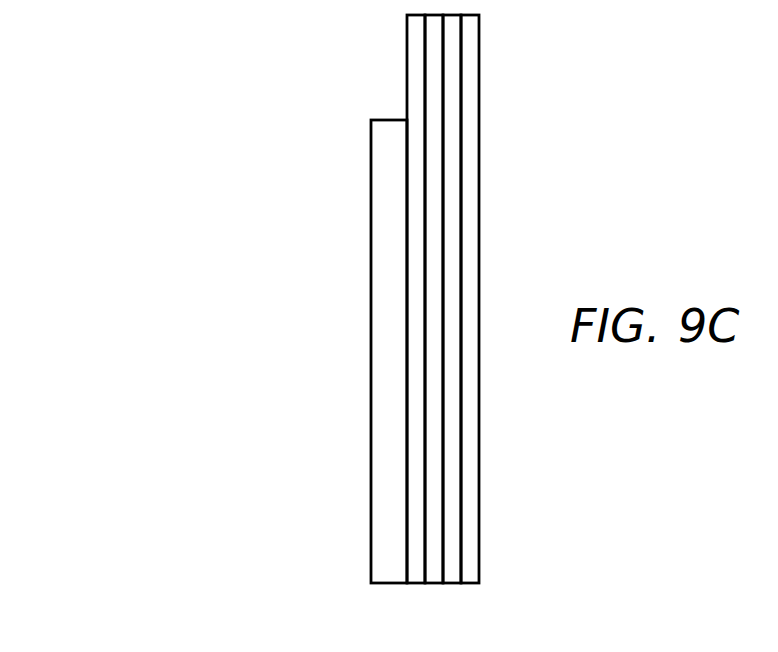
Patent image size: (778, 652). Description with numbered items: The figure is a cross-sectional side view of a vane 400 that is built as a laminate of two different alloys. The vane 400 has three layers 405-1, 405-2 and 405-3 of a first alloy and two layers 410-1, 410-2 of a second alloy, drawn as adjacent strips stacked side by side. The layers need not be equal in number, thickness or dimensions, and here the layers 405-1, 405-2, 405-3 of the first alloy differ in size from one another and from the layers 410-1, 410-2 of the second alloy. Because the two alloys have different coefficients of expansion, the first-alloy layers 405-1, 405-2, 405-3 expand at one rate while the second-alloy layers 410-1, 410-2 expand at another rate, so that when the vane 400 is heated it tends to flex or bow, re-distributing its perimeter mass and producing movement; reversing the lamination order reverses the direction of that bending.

The vane 400 is at (308, 157).
The layer of first alloy 405-1 is at (370, 256).
The layer of first alloy 405-2 is at (408, 330).
The layer of first alloy 405-3 is at (427, 533).
The layer of second alloy 410-1 is at (480, 197).
The layer of second alloy 410-2 is at (455, 478).